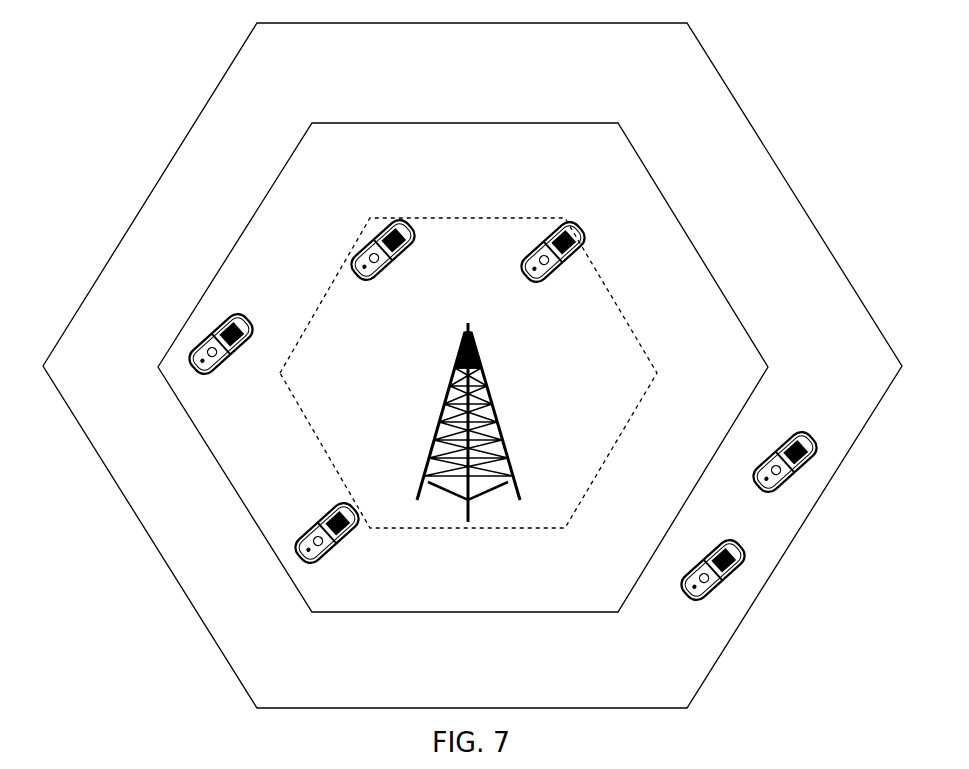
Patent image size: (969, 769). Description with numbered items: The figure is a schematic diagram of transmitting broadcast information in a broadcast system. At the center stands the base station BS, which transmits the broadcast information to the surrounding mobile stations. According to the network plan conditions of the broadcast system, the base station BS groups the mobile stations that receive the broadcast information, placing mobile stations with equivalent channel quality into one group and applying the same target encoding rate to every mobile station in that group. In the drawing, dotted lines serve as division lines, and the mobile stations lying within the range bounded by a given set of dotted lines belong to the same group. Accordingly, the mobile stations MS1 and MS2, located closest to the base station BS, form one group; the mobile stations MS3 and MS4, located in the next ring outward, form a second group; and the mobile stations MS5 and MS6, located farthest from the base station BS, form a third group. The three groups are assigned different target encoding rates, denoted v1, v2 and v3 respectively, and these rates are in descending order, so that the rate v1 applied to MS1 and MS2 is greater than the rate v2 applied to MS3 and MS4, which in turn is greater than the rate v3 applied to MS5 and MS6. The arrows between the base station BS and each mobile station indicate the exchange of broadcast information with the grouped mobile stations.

The base station BS is at (480, 422).
The mobile station MS1 is at (487, 320).
The mobile station MS2 is at (455, 312).
The mobile station MS3 is at (458, 332).
The mobile station MS4 is at (450, 345).
The mobile station MS5 is at (482, 333).
The mobile station MS6 is at (490, 328).
The target encoding rate V1 v1 is at (468, 373).
The target encoding rate V2 v2 is at (463, 367).
The target encoding rate V3 v3 is at (472, 365).